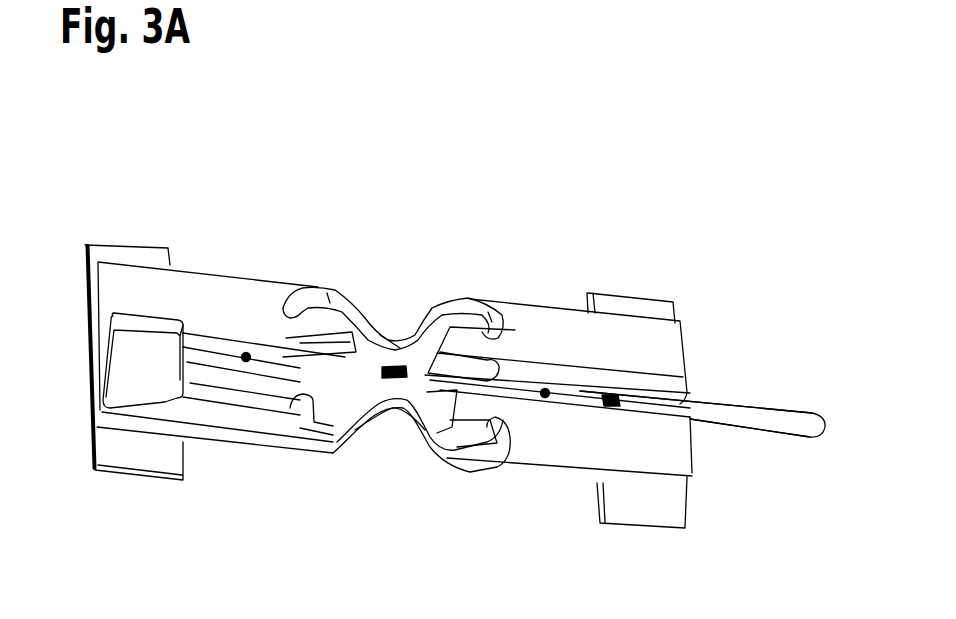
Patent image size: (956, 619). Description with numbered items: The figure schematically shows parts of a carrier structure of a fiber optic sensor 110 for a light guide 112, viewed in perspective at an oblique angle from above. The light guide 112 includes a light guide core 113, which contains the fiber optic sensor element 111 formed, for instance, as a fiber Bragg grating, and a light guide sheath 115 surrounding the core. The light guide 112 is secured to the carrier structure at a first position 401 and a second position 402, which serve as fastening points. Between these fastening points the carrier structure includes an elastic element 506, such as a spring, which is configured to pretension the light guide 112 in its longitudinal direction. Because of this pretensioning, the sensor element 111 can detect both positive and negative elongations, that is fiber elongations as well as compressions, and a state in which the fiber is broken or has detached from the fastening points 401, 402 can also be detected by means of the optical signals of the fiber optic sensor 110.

The fiber optic sensor 110 is at (670, 137).
The first position 401 is at (247, 354).
The fiber optic sensor element 111 is at (399, 345).
The light guide core 113 is at (396, 365).
The second position 402 is at (545, 388).
The light guide sheath 115 is at (613, 393).
The light guide 112 is at (775, 417).
The elastic element 506 is at (390, 413).